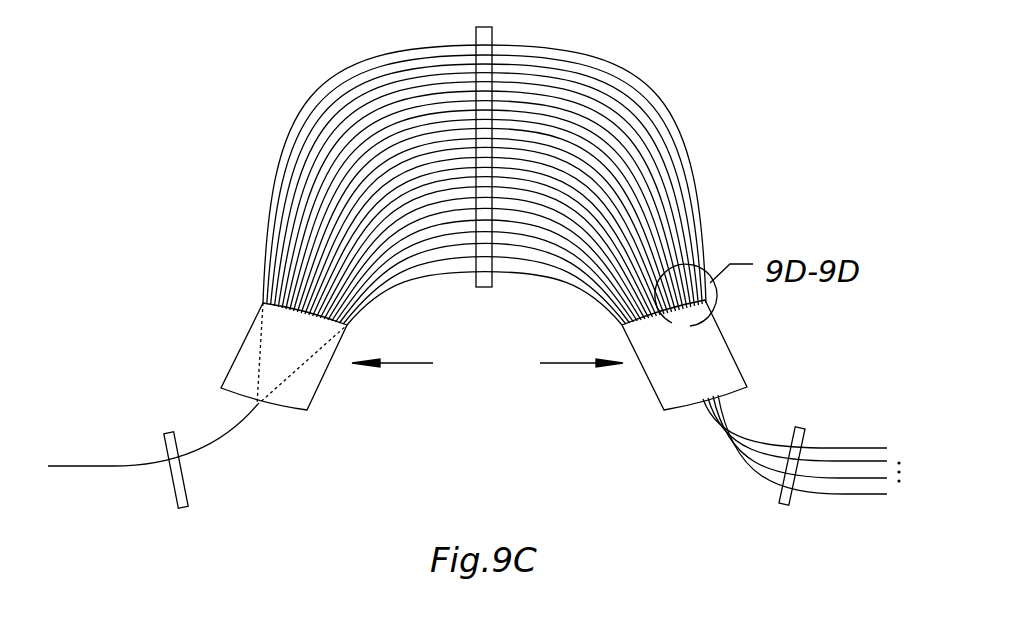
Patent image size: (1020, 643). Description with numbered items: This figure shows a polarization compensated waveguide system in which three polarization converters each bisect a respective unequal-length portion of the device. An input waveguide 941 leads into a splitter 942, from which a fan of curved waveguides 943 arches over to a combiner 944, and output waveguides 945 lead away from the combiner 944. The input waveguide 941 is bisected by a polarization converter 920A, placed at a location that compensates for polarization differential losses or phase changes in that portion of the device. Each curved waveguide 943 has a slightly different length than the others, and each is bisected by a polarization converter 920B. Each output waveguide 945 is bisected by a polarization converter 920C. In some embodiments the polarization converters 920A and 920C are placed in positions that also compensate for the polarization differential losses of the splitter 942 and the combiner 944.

The input waveguide 941 is at (100, 465).
The splitter 942 is at (237, 362).
The curved waveguide 943 is at (284, 160).
The combiner 944 is at (729, 357).
The output waveguide 945 is at (838, 430).
The polarization converter 920A is at (184, 497).
The polarization converter 920B is at (487, 283).
The polarization converter 920C is at (787, 490).